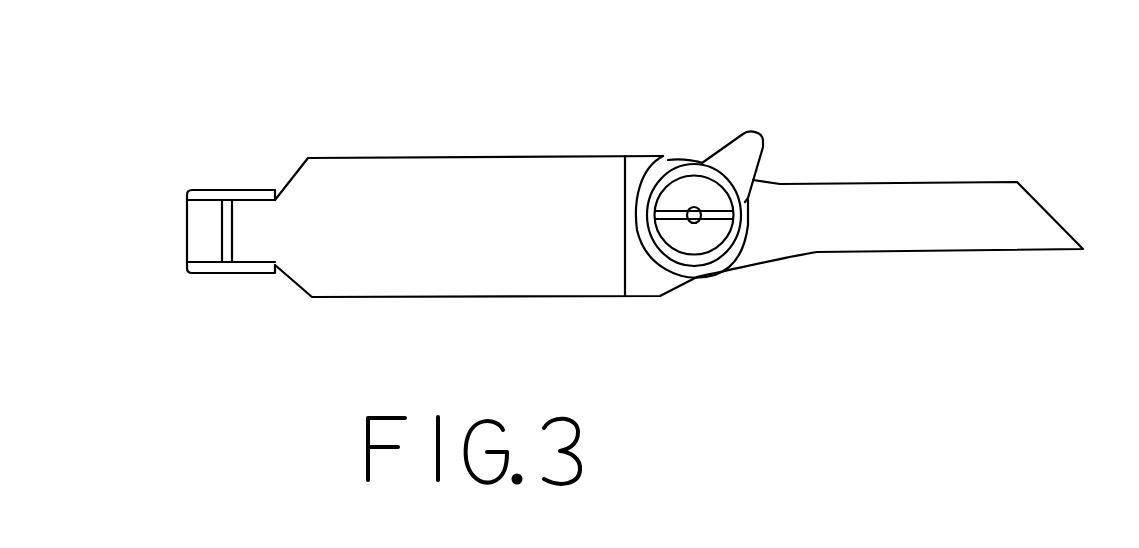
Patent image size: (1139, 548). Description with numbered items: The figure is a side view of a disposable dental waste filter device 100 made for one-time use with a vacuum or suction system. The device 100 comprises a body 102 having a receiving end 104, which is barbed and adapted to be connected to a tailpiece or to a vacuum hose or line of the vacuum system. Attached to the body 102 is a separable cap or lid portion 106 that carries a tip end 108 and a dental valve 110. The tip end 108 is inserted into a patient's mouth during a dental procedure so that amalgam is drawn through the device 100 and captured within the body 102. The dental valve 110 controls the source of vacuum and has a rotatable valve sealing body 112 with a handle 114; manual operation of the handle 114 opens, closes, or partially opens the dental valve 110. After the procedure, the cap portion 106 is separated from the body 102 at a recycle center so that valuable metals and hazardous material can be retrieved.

The disposable dental waste filter device 100 is at (541, 110).
The body 102 is at (405, 194).
The receiving end 104 is at (203, 228).
The cap portion 106 is at (645, 276).
The tip end 108 is at (936, 208).
The dental valve 110 is at (689, 139).
The rotatable valve sealing body 112 is at (708, 233).
The handle 114 is at (746, 152).